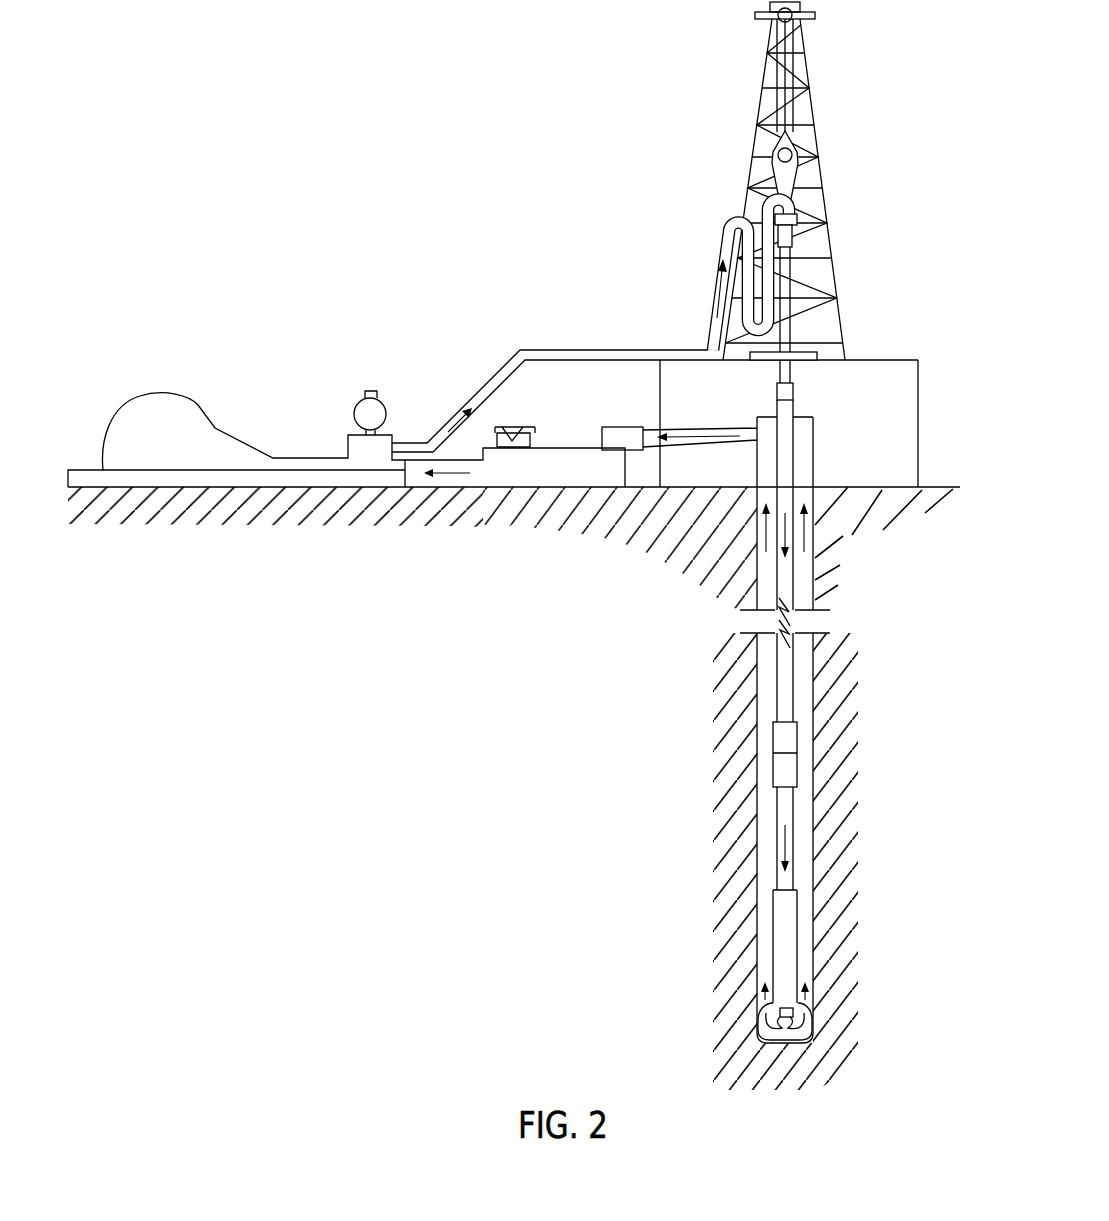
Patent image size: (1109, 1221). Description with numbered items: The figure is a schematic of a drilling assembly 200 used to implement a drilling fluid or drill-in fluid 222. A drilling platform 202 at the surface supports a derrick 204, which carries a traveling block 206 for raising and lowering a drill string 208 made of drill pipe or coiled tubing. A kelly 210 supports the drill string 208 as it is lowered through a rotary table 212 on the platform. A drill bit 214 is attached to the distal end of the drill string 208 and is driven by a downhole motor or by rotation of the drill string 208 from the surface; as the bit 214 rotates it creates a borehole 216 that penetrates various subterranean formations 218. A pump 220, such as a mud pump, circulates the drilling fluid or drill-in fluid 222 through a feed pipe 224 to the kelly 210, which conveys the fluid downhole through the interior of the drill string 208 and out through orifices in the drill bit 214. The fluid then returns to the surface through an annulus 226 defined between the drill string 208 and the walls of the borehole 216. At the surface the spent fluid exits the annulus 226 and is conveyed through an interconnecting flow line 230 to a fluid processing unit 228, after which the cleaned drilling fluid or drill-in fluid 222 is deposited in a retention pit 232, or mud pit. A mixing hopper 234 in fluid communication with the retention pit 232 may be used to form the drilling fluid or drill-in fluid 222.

The drilling assembly 200 is at (479, 81).
The drilling platform 202 is at (918, 376).
The derrick 204 is at (812, 103).
The traveling block 206 is at (800, 150).
The drill string 208 is at (791, 597).
The kelly 210 is at (793, 270).
The rotary table 212 is at (817, 356).
The drill bit 214 is at (814, 1012).
The borehole 216 is at (832, 683).
The subterranean formations 218 is at (637, 720).
The pump 220 is at (175, 452).
The drilling fluid or drill-in fluid 222 is at (420, 445).
The feed pipe 224 is at (524, 347).
The annulus 226 is at (804, 842).
The fluid processing unit 228 is at (617, 427).
The flow line 230 is at (737, 441).
The retention pit 232 is at (570, 481).
The mixing hopper 234 is at (498, 450).